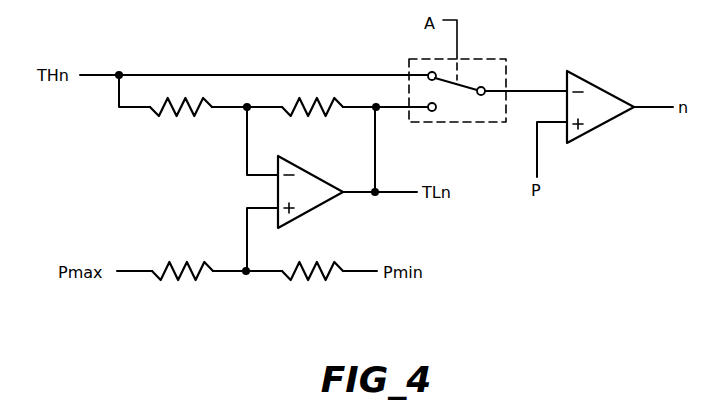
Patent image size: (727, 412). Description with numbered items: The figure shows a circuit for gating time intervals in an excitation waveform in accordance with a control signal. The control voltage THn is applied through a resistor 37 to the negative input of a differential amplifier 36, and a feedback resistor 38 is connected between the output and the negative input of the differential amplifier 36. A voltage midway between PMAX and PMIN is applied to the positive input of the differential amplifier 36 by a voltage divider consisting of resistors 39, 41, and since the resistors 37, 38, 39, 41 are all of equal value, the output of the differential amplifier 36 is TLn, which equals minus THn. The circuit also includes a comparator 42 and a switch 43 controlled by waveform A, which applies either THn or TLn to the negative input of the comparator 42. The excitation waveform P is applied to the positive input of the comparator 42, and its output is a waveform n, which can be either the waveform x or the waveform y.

The differential amplifier 36 is at (318, 207).
The resistor 37 is at (182, 110).
The feedback resistor 38 is at (308, 107).
The resistor 39 is at (183, 278).
The resistor 41 is at (310, 278).
The comparator 42 is at (598, 127).
The switch 43 is at (506, 59).